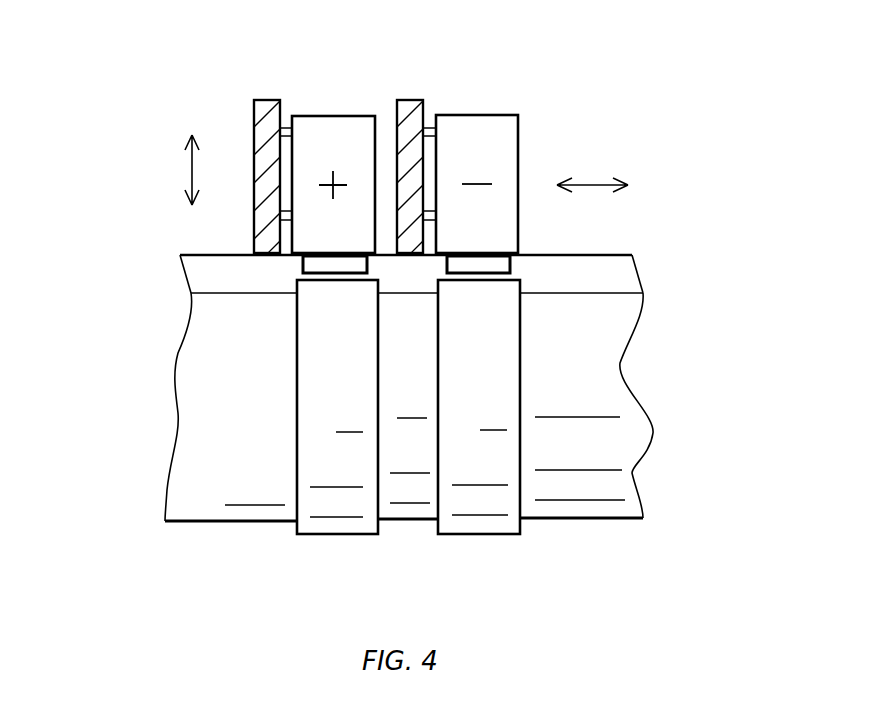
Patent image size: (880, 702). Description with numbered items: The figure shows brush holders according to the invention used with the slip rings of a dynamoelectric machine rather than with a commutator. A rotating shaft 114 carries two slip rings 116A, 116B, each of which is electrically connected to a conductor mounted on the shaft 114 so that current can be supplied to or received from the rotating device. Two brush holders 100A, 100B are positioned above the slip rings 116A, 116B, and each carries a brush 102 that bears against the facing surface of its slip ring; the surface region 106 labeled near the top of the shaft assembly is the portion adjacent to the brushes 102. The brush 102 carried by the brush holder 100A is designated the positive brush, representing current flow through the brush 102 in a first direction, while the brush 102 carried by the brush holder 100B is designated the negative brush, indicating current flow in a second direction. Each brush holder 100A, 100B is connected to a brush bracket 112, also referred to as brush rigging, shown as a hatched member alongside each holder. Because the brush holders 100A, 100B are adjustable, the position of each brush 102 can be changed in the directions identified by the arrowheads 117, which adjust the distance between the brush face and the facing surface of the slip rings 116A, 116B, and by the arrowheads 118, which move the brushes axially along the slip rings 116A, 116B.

The brush holder 100A is at (319, 117).
The brush holder 100B is at (483, 115).
The brush bracket 112 is at (268, 100).
The brush 102 is at (303, 262).
The top layer of substrate 106 is at (615, 252).
The rotating shaft 114 is at (598, 520).
The slip ring 116A is at (338, 535).
The slip ring 116B is at (482, 535).
The arrowheads 117 is at (190, 175).
The arrowheads 118 is at (593, 183).